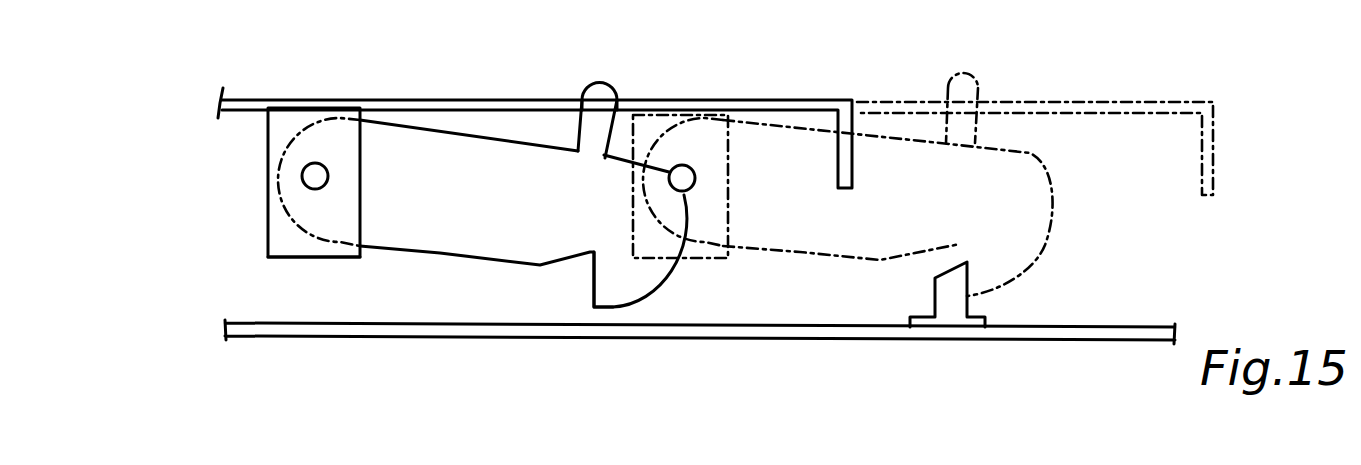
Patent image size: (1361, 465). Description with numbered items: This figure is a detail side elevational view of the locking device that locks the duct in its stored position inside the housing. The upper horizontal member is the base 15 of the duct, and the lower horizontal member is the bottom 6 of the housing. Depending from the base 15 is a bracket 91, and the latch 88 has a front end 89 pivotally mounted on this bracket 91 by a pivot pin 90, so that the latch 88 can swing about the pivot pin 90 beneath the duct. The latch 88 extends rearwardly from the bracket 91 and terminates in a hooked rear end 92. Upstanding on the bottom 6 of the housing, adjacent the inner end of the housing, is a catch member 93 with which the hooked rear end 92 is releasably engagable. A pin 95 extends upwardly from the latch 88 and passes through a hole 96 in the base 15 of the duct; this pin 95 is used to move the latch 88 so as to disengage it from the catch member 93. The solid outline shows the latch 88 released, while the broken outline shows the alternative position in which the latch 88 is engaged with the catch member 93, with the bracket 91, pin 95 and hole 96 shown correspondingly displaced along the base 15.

The bottom 6 is at (465, 325).
The base 15 is at (408, 100).
The latch 88 is at (420, 225).
The front end 89 is at (282, 228).
The pivot pin 90 is at (301, 178).
The bracket 91 is at (290, 262).
The hooked rear end 92 is at (617, 290).
The catch member 93 is at (950, 303).
The pin 95 is at (600, 78).
The hole 96 is at (625, 108).